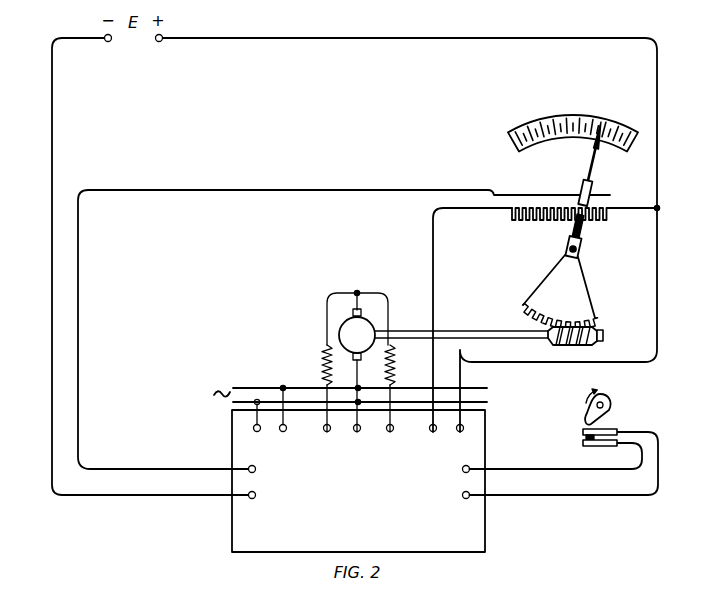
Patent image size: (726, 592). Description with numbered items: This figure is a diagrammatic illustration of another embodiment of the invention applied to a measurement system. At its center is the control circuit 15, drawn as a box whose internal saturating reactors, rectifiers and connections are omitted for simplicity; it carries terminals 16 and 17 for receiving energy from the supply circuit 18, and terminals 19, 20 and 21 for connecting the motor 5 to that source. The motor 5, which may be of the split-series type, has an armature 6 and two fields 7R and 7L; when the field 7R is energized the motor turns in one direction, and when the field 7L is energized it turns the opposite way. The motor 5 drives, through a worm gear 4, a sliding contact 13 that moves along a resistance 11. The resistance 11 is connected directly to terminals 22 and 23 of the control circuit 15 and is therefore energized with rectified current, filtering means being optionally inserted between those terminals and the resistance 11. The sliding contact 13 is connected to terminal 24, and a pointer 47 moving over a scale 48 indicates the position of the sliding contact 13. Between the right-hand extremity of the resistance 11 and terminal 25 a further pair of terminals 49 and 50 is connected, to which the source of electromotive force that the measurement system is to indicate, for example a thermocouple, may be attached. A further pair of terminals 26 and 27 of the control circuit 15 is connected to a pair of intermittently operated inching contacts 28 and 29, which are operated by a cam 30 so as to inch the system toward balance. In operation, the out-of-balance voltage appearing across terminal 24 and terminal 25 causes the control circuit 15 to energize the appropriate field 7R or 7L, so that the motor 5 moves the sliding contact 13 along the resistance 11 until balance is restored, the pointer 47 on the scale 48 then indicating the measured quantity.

The worm gear 4 is at (604, 331).
The motor 5 is at (345, 294).
The armature 6 is at (372, 317).
The field winding 7R is at (313, 388).
The field winding 7L is at (403, 388).
The resistance 11 is at (612, 216).
The sliding contact 13 is at (595, 188).
The control circuit 15 is at (351, 492).
The terminal 16 is at (257, 427).
The terminal 17 is at (283, 419).
The supply circuit 18 is at (236, 387).
The terminal 19 is at (327, 438).
The terminal 20 is at (358, 438).
The terminal 21 is at (390, 438).
The terminal 22 is at (429, 434).
The terminal 23 is at (464, 433).
The terminal 24 is at (264, 469).
The terminal 25 is at (264, 495).
The terminal 26 is at (542, 461).
The terminal 27 is at (550, 468).
The inching contact 28 is at (582, 432).
The inching contact 29 is at (582, 443).
The cam 30 is at (612, 403).
The pointer 47 is at (598, 162).
The scale 48 is at (567, 113).
The terminal 49 is at (108, 51).
The terminal 50 is at (159, 51).